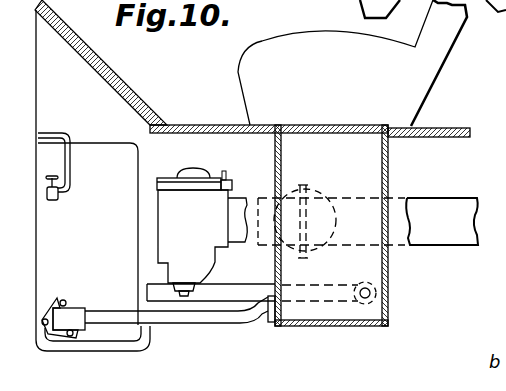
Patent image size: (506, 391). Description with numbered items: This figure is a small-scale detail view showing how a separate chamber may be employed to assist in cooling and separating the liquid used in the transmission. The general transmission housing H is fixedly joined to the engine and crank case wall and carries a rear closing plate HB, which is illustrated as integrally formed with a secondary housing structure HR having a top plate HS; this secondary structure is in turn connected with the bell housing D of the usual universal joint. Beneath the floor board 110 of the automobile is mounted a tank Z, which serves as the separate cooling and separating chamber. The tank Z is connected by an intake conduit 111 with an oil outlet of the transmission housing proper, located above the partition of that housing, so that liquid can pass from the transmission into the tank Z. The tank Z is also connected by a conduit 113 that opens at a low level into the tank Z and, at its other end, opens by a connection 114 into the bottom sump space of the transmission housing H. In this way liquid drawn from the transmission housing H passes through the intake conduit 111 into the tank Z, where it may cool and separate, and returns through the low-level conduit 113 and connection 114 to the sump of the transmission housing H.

The floor board 110 is at (195, 126).
The general transmission housing H is at (83, 147).
The rear closing plate HB is at (147, 173).
The top plate HS is at (202, 172).
The secondary housing structure HR is at (218, 251).
The bell housing D is at (312, 198).
The tank Z is at (381, 174).
The conduit 113 is at (187, 320).
The intake conduit 111 is at (245, 293).
The connection 114 is at (72, 313).